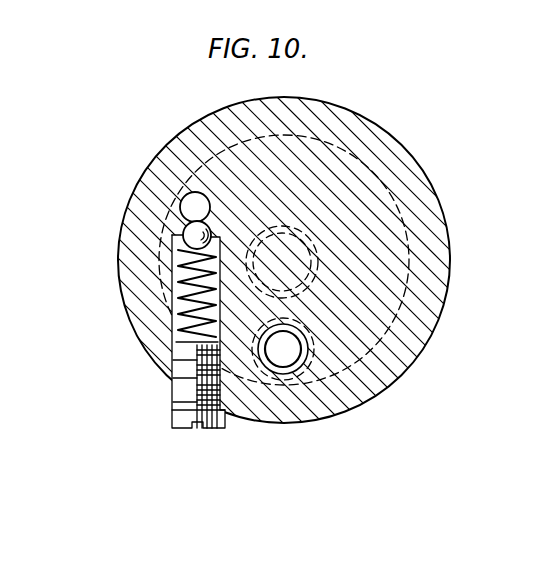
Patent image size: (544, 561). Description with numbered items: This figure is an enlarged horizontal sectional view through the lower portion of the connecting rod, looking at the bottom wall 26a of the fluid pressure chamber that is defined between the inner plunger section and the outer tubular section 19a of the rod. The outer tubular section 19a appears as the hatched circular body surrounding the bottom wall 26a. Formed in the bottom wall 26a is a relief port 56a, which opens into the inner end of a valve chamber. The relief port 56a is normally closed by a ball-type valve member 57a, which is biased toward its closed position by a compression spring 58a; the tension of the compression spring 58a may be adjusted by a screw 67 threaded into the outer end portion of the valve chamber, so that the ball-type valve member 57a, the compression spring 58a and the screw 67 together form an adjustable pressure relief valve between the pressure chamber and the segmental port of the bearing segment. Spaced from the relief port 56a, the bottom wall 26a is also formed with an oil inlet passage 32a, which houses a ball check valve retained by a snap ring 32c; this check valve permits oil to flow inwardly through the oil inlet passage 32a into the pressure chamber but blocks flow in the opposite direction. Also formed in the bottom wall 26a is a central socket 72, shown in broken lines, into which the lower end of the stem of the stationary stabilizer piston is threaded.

The outer tubular section 19a is at (437, 329).
The bottom wall 26a is at (412, 257).
The central socket 72 is at (315, 247).
The screw 67 is at (172, 390).
The compression spring 58a is at (180, 302).
The relief port 56a is at (196, 206).
The ball-type valve member 57a is at (197, 235).
The snap ring 32c is at (292, 378).
The oil inlet passage 32a is at (275, 375).